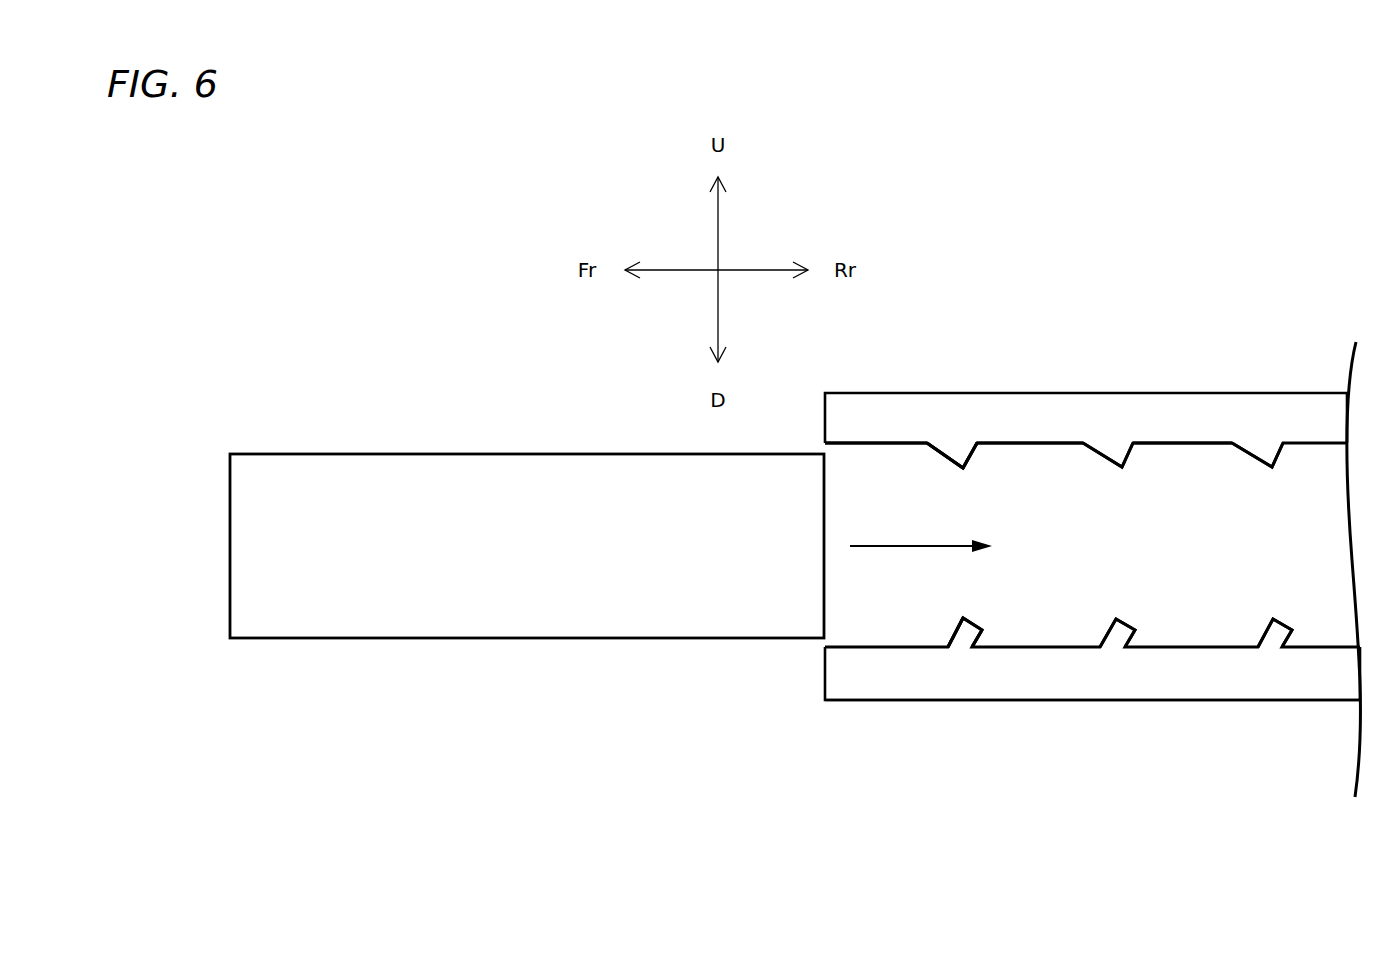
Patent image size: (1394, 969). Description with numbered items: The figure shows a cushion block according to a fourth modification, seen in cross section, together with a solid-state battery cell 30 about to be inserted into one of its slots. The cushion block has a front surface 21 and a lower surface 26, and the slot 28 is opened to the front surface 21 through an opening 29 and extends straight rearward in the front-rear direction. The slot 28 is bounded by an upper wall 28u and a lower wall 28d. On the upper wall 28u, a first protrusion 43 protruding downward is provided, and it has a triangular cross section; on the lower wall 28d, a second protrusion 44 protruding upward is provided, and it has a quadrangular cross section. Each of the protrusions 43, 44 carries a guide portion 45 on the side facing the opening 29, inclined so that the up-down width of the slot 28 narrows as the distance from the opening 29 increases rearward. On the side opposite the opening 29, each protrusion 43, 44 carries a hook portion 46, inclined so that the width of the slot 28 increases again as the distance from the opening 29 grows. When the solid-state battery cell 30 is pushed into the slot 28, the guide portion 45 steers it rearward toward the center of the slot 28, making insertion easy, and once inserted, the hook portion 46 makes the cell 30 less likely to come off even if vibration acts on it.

The front surface 21 is at (824, 686).
The lower surface 26 is at (1005, 700).
The slot 28 is at (1310, 570).
The upper wall 28u is at (1200, 445).
The lower wall 28d is at (1042, 647).
The opening 29 is at (835, 477).
The solid-state battery cell 30 is at (527, 638).
The first protrusion 43 is at (953, 452).
The second protrusion 44 is at (963, 637).
The guide portion 45 is at (931, 452).
The hook portion 46 is at (975, 452).